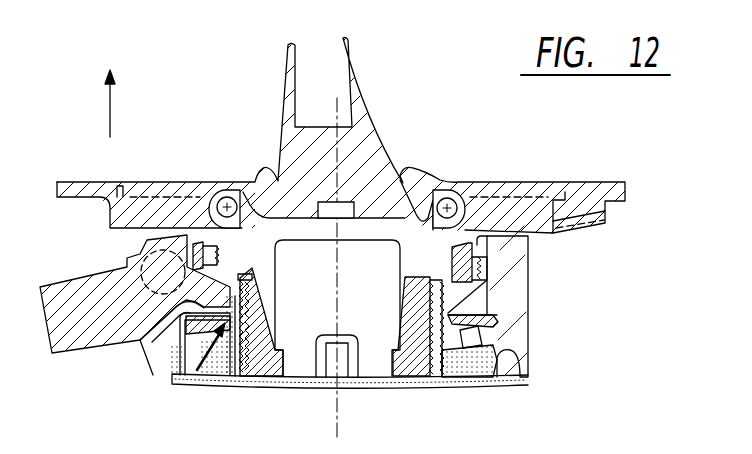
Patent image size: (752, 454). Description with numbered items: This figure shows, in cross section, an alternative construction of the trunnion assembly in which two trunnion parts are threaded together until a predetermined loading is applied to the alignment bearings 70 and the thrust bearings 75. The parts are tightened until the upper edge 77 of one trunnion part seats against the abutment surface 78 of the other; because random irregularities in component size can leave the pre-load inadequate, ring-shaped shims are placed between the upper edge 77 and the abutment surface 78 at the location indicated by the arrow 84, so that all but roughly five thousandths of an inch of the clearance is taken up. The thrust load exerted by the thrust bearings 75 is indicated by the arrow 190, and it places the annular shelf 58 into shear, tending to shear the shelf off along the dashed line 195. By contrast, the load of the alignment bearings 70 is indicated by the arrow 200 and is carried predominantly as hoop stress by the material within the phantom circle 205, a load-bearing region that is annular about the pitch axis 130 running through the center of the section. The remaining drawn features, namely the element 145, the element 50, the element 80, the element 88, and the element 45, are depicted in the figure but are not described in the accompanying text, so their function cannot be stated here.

The direction arrow 145 is at (113, 108).
The alignment bearings 70 is at (196, 228).
The pitch axis 130 is at (337, 148).
The lobe 50 is at (425, 182).
The phantom circle 205 is at (128, 266).
The arrow 200 is at (226, 257).
The arrow 84 is at (452, 273).
The abutment surface 78 is at (255, 270).
The upper edge 77 is at (268, 323).
The annular shelf 58 is at (474, 299).
The dashed line 195 is at (491, 296).
The thrust bearings 75 is at (495, 331).
The arrow 190 is at (466, 349).
The wedge 80 is at (140, 345).
The insert 88 is at (170, 372).
The channel 45 is at (232, 375).